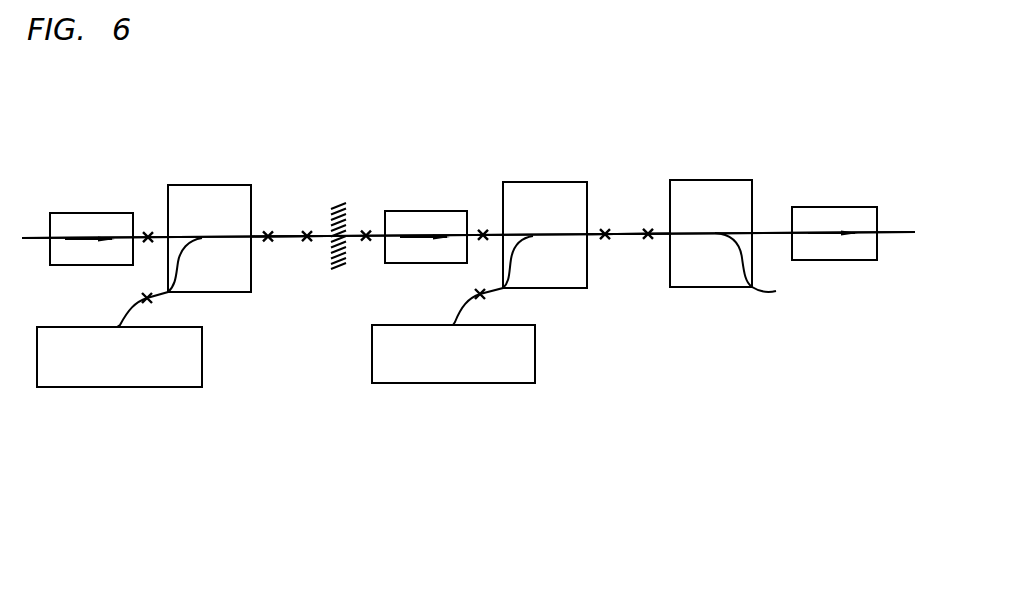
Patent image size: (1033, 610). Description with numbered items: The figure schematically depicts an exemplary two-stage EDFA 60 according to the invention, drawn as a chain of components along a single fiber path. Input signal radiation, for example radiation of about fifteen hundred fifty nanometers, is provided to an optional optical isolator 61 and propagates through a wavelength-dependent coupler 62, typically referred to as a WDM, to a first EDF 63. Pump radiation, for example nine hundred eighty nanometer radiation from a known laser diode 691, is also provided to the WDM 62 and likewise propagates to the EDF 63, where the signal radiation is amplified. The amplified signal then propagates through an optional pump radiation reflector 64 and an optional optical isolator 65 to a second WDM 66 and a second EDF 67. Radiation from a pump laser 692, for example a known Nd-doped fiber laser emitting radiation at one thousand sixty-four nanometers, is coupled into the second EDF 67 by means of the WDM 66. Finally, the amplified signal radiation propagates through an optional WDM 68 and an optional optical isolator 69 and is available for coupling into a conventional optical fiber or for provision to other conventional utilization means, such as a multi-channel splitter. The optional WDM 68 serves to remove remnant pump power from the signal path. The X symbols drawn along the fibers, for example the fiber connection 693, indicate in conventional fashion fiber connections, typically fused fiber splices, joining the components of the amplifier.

The 2-stage EDFA 60 is at (487, 124).
The optical isolator 61 is at (117, 213).
The wavelength-dependent coupler 62 is at (237, 185).
The first EDF 63 is at (284, 238).
The pump radiation reflector 64 is at (342, 203).
The optical isolator 65 is at (452, 211).
The WDM 66 is at (570, 182).
The second EDF 67 is at (615, 234).
The WDM 68 is at (740, 180).
The optical isolator 69 is at (860, 207).
The laser diode 691 is at (88, 387).
The pump laser 692 is at (423, 383).
The fiber connection 693 is at (147, 298).